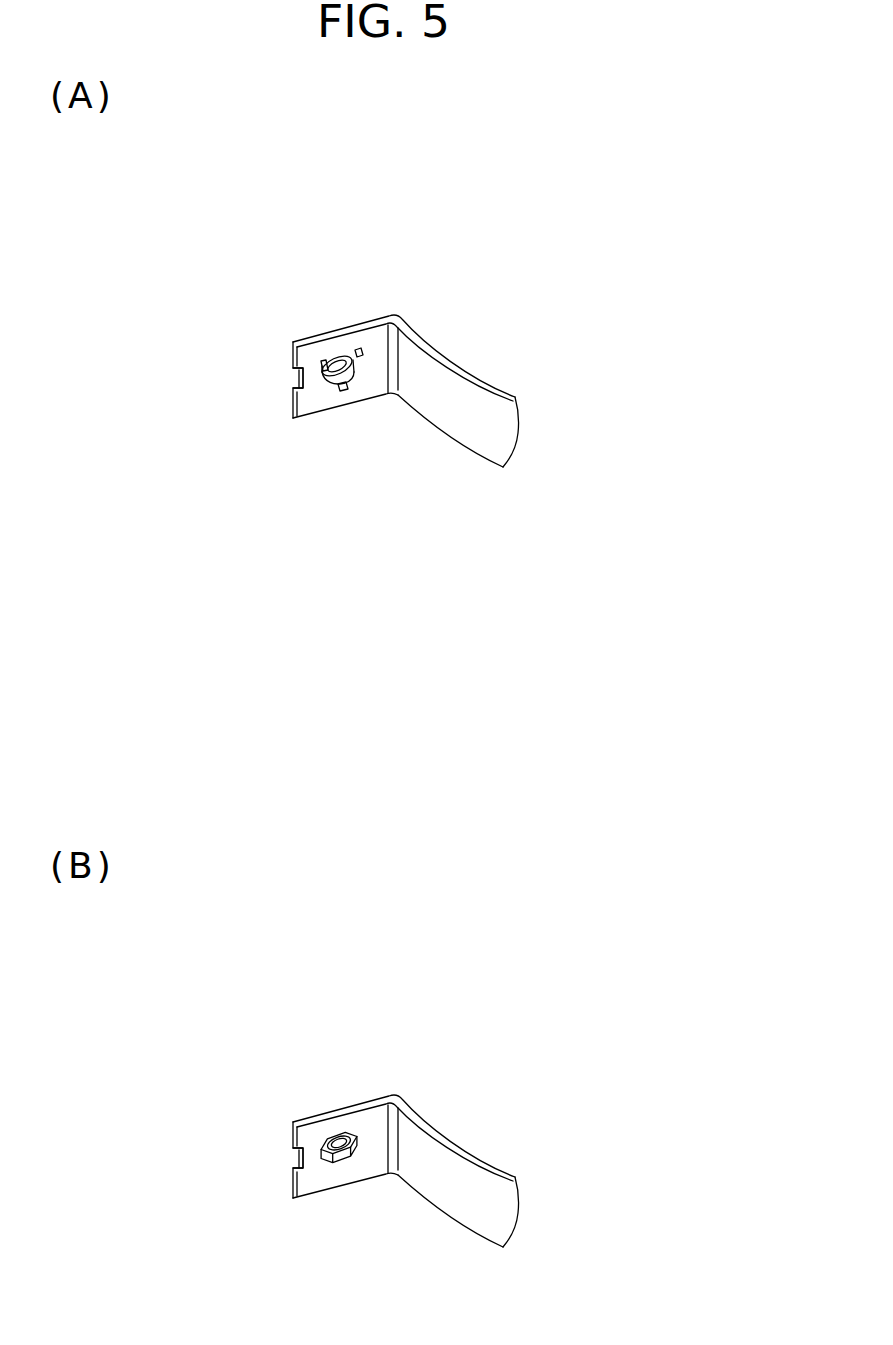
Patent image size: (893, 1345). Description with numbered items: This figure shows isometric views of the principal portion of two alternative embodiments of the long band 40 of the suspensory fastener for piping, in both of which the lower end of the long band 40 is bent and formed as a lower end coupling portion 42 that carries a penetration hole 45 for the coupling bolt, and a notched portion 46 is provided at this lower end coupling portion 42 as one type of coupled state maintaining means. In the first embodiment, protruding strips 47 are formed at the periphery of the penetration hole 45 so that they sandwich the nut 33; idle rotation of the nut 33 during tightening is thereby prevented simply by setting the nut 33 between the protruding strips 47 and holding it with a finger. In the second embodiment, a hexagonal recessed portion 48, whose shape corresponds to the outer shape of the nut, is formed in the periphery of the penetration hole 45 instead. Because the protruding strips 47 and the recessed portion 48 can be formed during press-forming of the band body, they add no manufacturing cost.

The long band 40 is at (374, 729).
The lower end coupling portion 42 is at (369, 332).
The penetration hole 45 is at (357, 757).
The notched portion 46 is at (295, 380).
The protruding strips 47 is at (360, 360).
The nut 33 is at (330, 382).
The hexagonal recessed portion 48 is at (340, 1152).